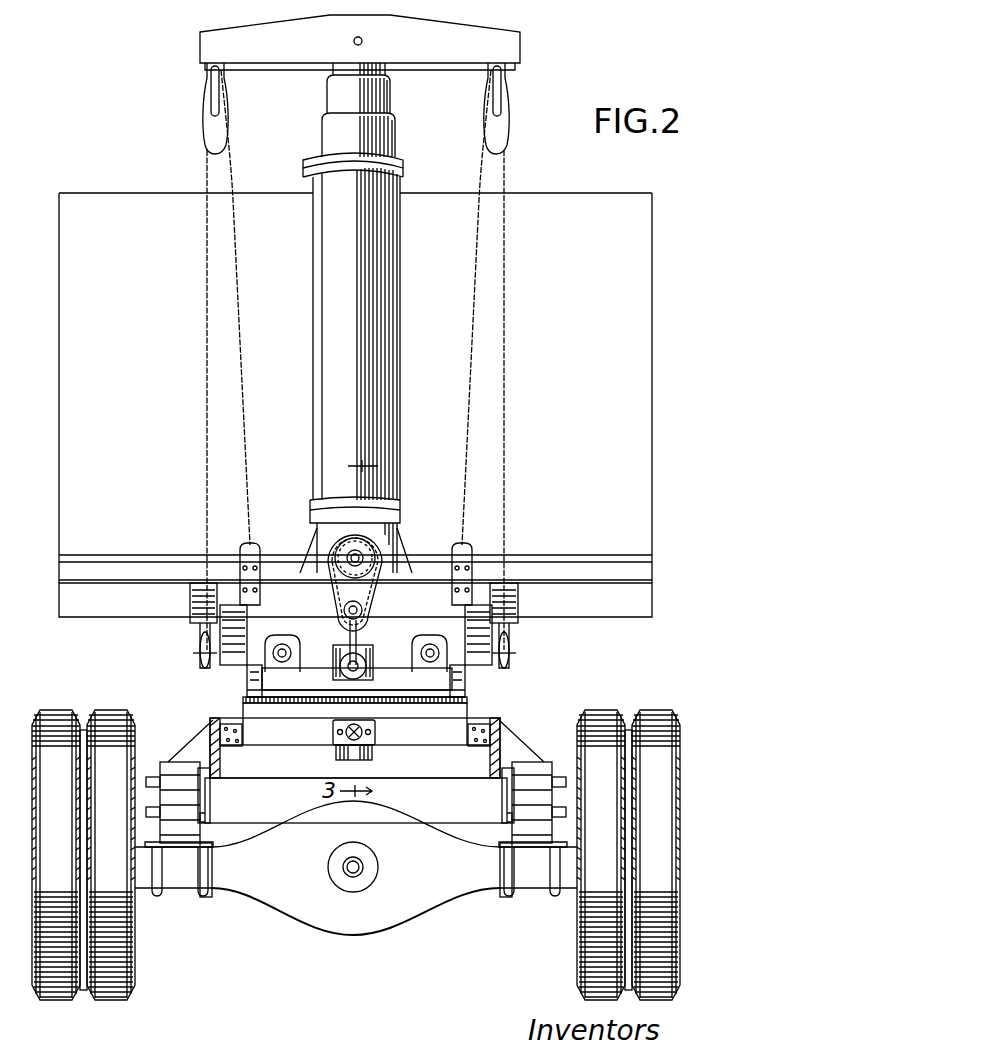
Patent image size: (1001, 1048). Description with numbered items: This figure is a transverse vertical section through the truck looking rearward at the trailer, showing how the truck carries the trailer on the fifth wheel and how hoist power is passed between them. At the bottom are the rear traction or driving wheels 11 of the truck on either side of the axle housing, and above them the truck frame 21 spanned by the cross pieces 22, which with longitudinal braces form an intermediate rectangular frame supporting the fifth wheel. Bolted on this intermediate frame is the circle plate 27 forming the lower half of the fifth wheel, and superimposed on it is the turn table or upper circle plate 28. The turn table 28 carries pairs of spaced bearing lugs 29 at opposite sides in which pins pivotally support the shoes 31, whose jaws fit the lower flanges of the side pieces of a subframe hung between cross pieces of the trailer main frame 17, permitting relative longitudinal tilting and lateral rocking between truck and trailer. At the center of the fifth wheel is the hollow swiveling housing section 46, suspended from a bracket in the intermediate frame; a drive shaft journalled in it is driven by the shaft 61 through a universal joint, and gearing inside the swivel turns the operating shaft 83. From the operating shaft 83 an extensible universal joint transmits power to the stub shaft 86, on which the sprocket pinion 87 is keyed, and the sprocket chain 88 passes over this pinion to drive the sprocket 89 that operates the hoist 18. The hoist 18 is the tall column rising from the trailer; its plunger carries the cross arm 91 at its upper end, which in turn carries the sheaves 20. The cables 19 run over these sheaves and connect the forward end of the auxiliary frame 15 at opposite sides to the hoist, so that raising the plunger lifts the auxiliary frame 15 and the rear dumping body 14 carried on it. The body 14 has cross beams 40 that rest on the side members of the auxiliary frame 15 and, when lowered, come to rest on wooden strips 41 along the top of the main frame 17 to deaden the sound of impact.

The cross arm 91 is at (305, 60).
The sheaves 20 is at (205, 130).
The cables 19 is at (198, 420).
The hoist 18 is at (402, 404).
The rear dumping body 14 is at (636, 462).
The cross beams 40 is at (640, 580).
The sprocket 89 is at (372, 553).
The sprocket chain 88 is at (330, 576).
The sprocket pinion 87 is at (376, 585).
The stub shaft 86 is at (341, 611).
The shoes 31 is at (289, 640).
The auxiliary frame 15 is at (190, 625).
The main frame 17 is at (518, 647).
The operating shaft 83 is at (336, 654).
The wooden strips 41 is at (366, 662).
The bearing lugs 29 is at (247, 676).
The turn table 28 is at (462, 697).
The circle plate 27 is at (294, 703).
The shaft 61 is at (362, 730).
The housing section 46 is at (368, 753).
The truck frame 21 is at (216, 722).
The cross pieces 22 is at (258, 735).
The rear traction wheels 11 is at (60, 712).